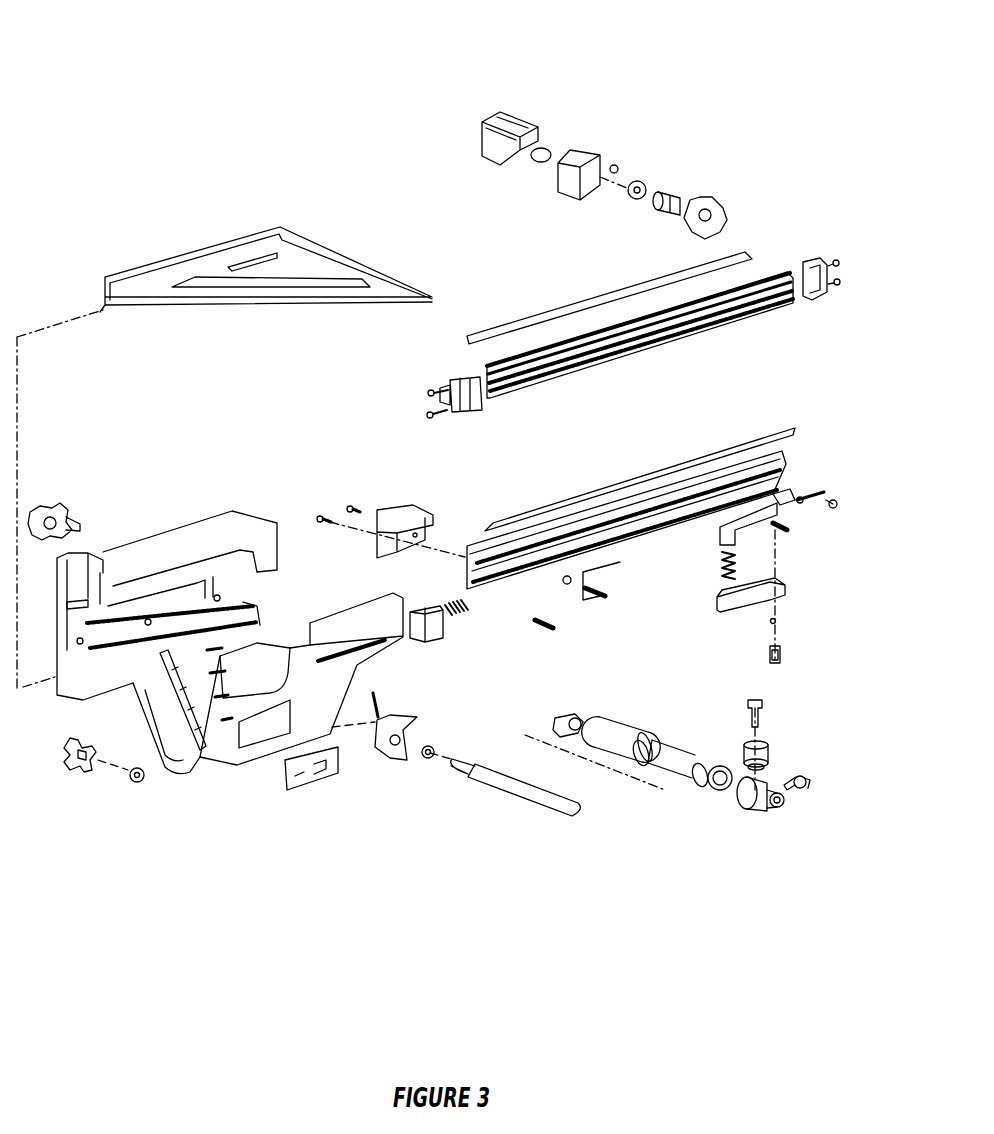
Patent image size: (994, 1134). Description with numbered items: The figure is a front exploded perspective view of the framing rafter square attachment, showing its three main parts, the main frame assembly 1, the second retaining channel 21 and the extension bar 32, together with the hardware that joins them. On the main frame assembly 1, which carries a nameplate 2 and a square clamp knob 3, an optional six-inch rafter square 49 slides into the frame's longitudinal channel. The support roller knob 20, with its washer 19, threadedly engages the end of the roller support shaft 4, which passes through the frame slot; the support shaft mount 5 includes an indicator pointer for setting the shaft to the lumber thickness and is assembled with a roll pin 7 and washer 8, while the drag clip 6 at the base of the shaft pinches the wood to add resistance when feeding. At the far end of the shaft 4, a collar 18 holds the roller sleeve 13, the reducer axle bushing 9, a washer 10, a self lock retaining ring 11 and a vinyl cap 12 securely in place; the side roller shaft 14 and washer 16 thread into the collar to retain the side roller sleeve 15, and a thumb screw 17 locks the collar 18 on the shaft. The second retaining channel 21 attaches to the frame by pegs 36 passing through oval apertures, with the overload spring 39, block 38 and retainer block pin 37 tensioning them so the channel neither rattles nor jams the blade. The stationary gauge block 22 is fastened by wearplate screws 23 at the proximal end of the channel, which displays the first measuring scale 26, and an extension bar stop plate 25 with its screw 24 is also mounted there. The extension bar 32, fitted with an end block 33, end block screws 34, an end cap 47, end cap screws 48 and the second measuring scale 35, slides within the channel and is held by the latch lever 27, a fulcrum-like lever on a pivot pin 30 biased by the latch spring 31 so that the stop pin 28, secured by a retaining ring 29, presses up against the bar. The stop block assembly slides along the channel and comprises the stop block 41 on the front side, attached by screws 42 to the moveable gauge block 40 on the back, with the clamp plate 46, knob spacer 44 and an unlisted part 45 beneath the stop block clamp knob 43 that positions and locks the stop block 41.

The main frame assembly 1 is at (188, 782).
The nameplate 2 is at (305, 793).
The square clamp knob 3 is at (65, 500).
The roller support shaft 4 is at (555, 817).
The support shaft mount 5 is at (400, 762).
The drag clip 6 is at (568, 718).
The roll pin 7 is at (388, 695).
The washer 8 is at (432, 759).
The reducer axle bushing 9 is at (683, 785).
The washer 10 is at (708, 797).
The self lock retaining ring 11 is at (720, 793).
The vinyl cap 12 is at (777, 807).
The roller sleeve 13 is at (637, 770).
The side roller shaft 14 is at (765, 712).
The side roller sleeve 15 is at (778, 762).
The washer 16 is at (768, 748).
The thumb screw 17 is at (808, 790).
The collar 18 is at (753, 810).
The washer 19 is at (135, 789).
The support roller knob 20 is at (90, 783).
The second retaining channel 21 is at (790, 462).
The stationary gauge block 22 is at (388, 502).
The wearplate screw 23 is at (343, 497).
The stop plate screw 24 is at (838, 506).
The extension bar stop plate 25 is at (815, 492).
The first measuring scale 26 is at (797, 430).
The latch lever 27 is at (782, 601).
The stop pin 28 is at (782, 655).
The retaining ring 29 is at (780, 624).
The pivot pin 30 is at (793, 533).
The latch spring 31 is at (740, 560).
The extension bar 32 is at (527, 395).
The end block 33 is at (478, 417).
The end block screw 34 is at (435, 415).
The second measuring scale 35 is at (548, 328).
The pegs 36 is at (606, 598).
The retainer block pin 37 is at (555, 628).
The block 38 is at (436, 637).
The spring 39 is at (465, 615).
The moveable gauge block 40 is at (523, 113).
The stop block 41 is at (598, 138).
The stop block screw 42 is at (618, 162).
The stop block clamp knob 43 is at (718, 190).
The knob spacer 44 is at (673, 185).
The washer 45 is at (647, 175).
The clamp plate 46 is at (550, 143).
The extension bar end cap 47 is at (818, 300).
The end cap screw 48 is at (838, 285).
The rafter square 49 is at (397, 283).